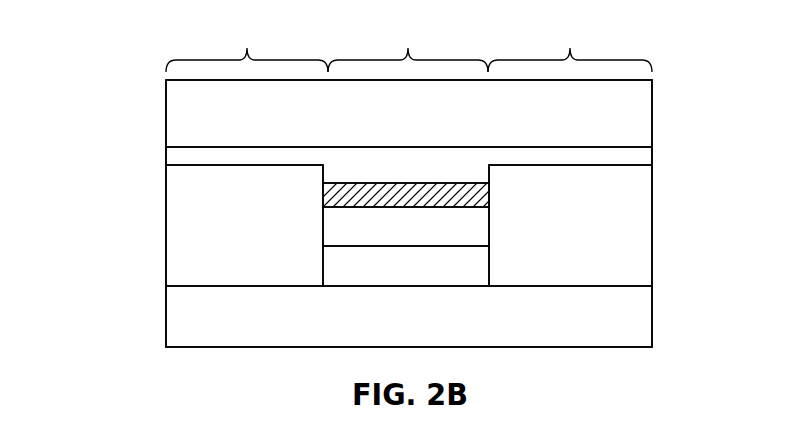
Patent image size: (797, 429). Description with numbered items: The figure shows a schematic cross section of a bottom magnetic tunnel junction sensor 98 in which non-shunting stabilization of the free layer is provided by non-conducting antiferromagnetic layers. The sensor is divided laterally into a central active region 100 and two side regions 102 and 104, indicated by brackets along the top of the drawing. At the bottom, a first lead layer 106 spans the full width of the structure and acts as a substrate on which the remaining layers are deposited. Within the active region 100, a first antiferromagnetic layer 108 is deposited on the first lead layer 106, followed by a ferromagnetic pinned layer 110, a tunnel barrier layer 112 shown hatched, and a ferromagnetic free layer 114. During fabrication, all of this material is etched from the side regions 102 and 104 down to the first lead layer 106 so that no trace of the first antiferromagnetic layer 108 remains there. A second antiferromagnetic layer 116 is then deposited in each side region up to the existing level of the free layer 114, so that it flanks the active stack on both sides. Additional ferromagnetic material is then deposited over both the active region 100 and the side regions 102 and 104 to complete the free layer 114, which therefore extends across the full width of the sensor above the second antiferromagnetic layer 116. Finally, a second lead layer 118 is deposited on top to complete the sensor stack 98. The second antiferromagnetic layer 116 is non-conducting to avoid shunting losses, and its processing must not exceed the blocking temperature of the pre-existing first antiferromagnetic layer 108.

The bottom MTJ sensor 98 is at (127, 93).
The active region 100 is at (408, 47).
The side region 102 is at (247, 47).
The side region 104 is at (570, 47).
The first lead (L1) layer 106 is at (643, 317).
The first AFM layer 108 is at (480, 268).
The FM pinned layer 110 is at (482, 229).
The tunnel barrier layer 112 is at (483, 194).
The FM free layer 114 is at (643, 158).
The second AFM layer 116 is at (177, 238).
The second lead (L2) layer 118 is at (643, 108).